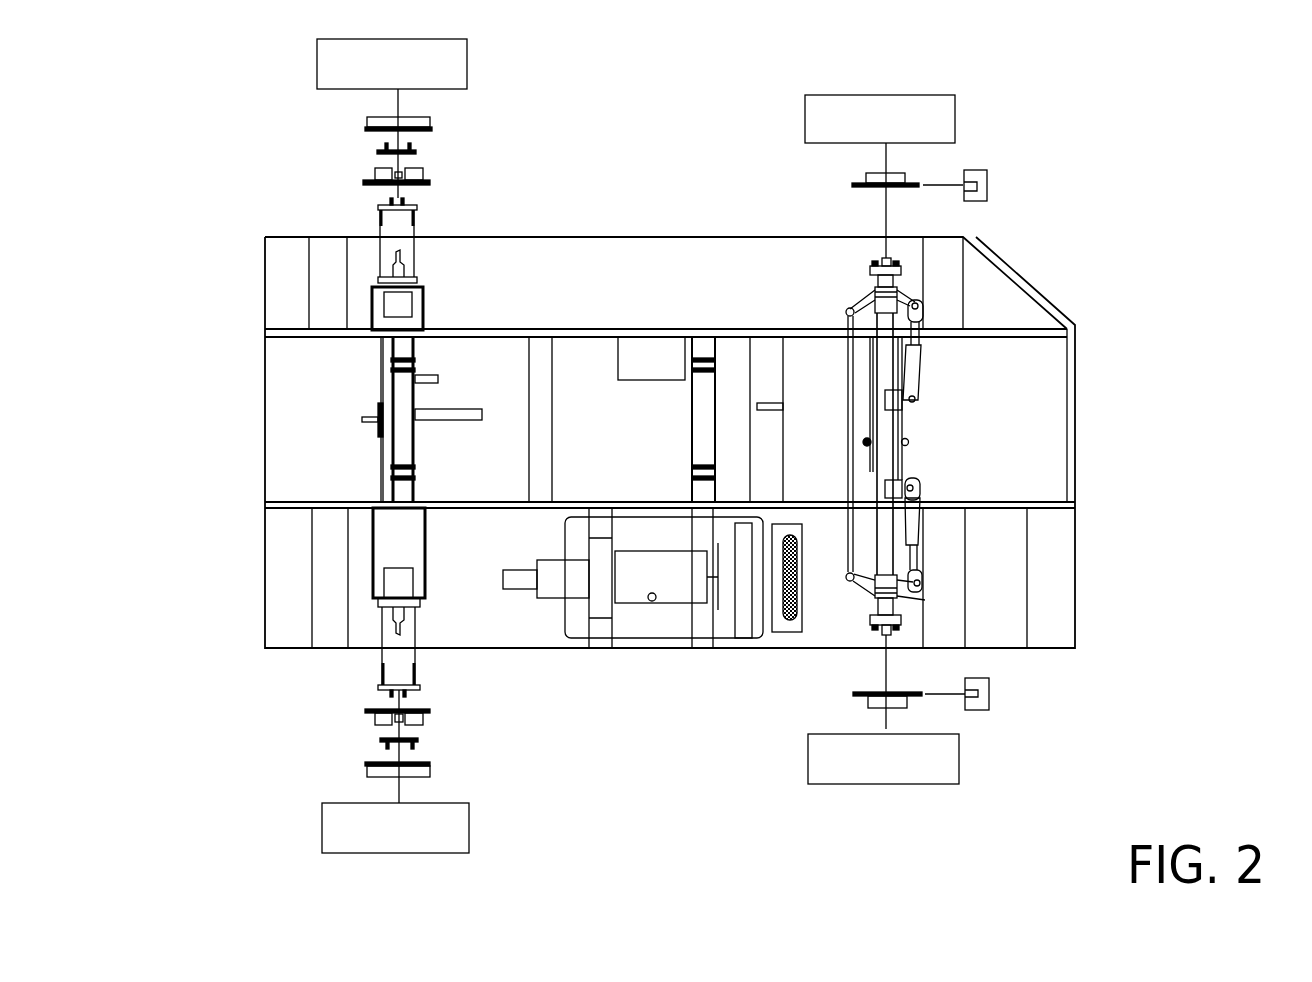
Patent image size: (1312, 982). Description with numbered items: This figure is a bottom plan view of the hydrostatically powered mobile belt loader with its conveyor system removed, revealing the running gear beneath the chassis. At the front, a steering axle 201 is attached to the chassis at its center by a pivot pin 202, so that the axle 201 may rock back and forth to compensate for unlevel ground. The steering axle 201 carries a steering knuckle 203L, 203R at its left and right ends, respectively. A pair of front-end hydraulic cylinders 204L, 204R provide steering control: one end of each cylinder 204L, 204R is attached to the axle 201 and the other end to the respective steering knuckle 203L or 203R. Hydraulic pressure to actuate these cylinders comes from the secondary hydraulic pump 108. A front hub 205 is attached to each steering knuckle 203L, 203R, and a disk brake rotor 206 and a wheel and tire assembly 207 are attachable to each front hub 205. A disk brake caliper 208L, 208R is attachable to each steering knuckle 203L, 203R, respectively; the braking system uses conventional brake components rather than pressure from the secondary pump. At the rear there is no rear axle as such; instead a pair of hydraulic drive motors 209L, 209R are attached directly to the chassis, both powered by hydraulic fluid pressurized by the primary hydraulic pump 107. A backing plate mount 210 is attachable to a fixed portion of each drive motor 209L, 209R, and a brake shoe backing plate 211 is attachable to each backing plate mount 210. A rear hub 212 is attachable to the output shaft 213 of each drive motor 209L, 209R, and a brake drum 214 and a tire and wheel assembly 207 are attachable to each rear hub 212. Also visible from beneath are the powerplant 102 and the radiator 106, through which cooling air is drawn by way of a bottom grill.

The powerplant 102 is at (633, 588).
The radiator 106 is at (742, 618).
The primary hydraulic pump 107 is at (550, 585).
The secondary hydraulic pump 108 is at (517, 583).
The steering axle 201 is at (880, 432).
The pivot pin 202 is at (908, 443).
The right steering knuckle 203R is at (900, 302).
The left steering knuckle 203L is at (908, 590).
The right front-end hydraulic cylinder 204R is at (915, 375).
The left front-end hydraulic cylinder 204L is at (918, 517).
The front hub 205 is at (882, 258).
The disk brake rotor 206 is at (877, 178).
The wheel and tire assembly 207 is at (340, 63).
The right disk brake caliper 208R is at (985, 176).
The left disk brake caliper 208L is at (988, 703).
The right hydraulic drive motor 209R is at (395, 303).
The left hydraulic drive motor 209L is at (397, 582).
The backing plate mount 210 is at (418, 207).
The brake shoe backing plate 211 is at (365, 182).
The rear hub 212 is at (378, 152).
The output shaft 213 is at (393, 262).
The brake drum 214 is at (420, 122).